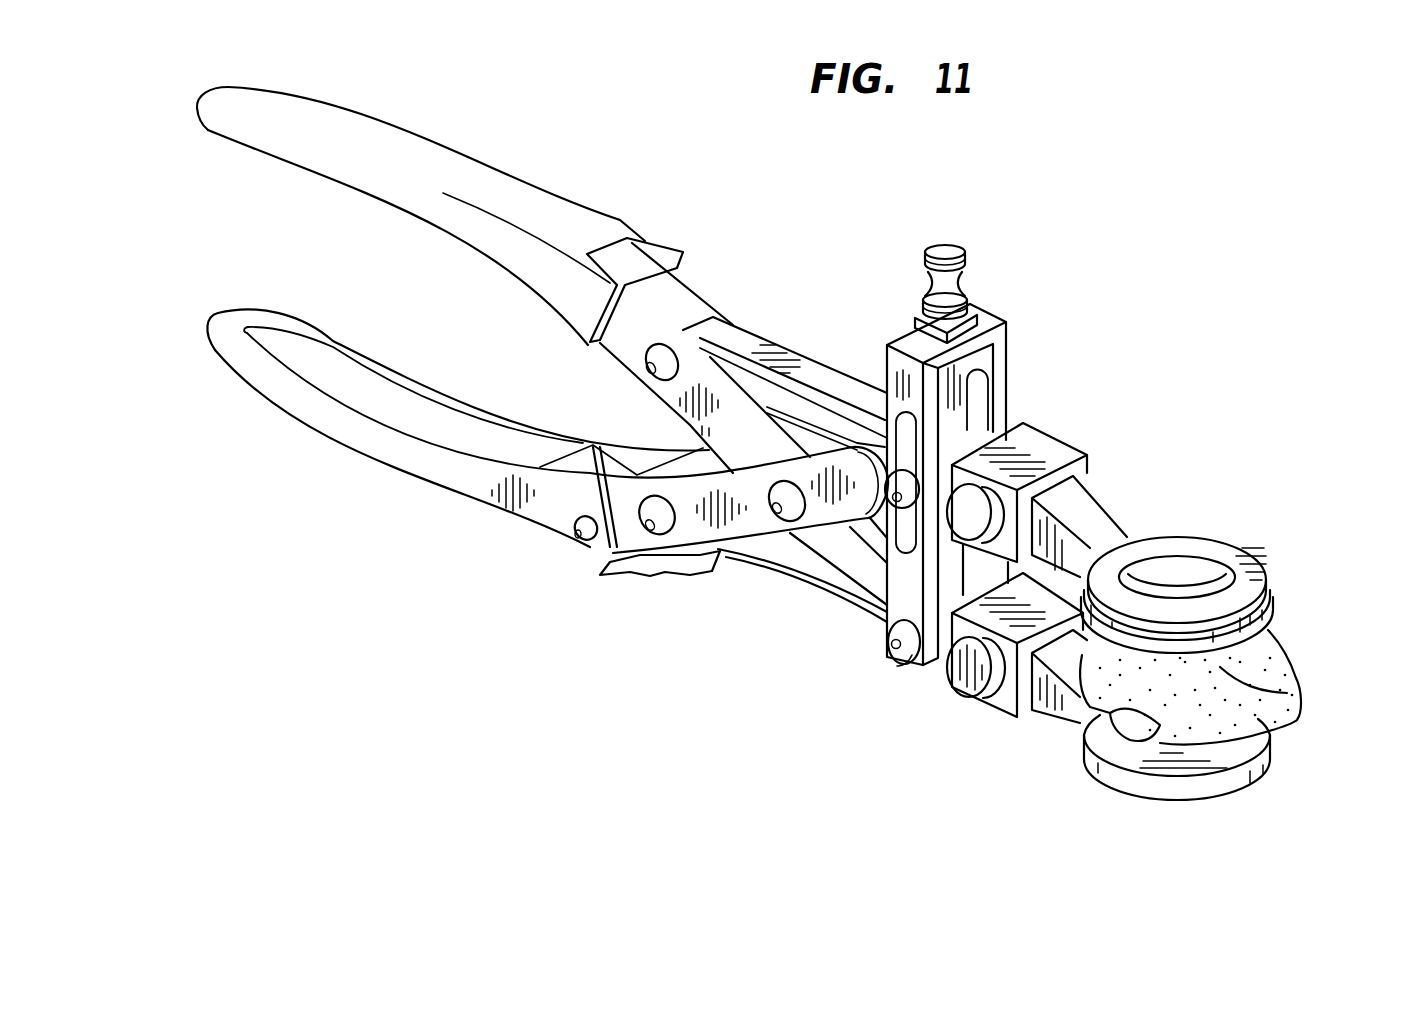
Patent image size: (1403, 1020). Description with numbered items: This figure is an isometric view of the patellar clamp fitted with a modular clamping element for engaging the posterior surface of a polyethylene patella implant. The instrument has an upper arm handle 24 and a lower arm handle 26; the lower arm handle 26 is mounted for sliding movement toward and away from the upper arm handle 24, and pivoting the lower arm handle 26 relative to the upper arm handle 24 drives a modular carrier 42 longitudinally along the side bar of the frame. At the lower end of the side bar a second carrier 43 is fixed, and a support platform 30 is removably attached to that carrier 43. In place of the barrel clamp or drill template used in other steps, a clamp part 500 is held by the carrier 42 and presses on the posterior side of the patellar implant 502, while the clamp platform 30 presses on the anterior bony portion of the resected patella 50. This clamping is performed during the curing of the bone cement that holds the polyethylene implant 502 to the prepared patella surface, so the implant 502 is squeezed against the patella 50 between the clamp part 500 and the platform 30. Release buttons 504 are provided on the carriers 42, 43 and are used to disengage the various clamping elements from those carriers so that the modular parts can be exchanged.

The upper arm handle 24 is at (392, 120).
The lower arm handle 26 is at (245, 385).
The modular carrier 42 is at (1062, 440).
The carrier 43 is at (1008, 702).
The clamp part 500 is at (1242, 548).
The patellar implant 502 is at (1188, 572).
The release buttons 504 is at (975, 514).
The resected patella 50 is at (1300, 712).
The support platform 30 is at (1110, 787).